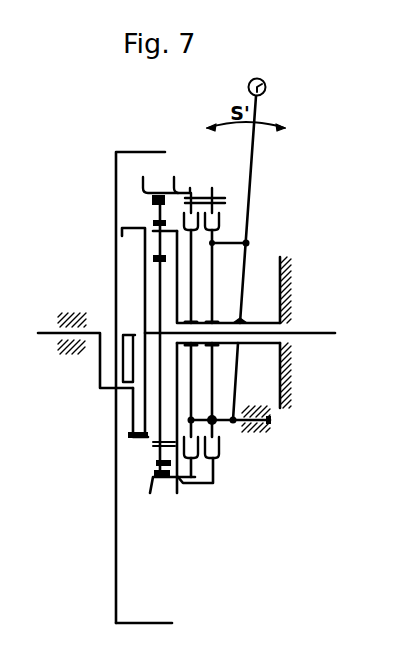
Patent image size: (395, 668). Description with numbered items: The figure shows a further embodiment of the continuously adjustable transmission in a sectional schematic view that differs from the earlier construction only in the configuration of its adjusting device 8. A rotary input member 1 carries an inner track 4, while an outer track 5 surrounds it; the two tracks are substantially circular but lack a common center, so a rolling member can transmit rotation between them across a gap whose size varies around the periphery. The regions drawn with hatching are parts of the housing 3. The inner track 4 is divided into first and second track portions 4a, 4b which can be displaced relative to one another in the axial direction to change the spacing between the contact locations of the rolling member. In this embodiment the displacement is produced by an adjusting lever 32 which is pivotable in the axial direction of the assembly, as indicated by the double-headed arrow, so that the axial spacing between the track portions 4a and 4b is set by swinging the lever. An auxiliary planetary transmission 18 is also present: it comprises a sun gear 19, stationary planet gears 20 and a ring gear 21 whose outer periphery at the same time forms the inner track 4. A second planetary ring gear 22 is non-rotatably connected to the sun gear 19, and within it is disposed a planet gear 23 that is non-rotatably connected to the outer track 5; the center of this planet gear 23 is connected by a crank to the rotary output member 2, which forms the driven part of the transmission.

The rotary input member 1 is at (197, 188).
The rotary output member 2 is at (42, 337).
The housing 3 is at (284, 267).
The inner track 4 is at (163, 492).
The first track portion 4a is at (150, 493).
The second track portion 4b is at (179, 494).
The outer track 5 is at (162, 620).
The adjusting device 8 is at (252, 202).
The planetary transmission 18 is at (150, 222).
The sun gear 19 is at (160, 327).
The stationary planet gears 20 is at (157, 452).
The ring gear 21 is at (148, 193).
The second planetary ring gear 22 is at (124, 233).
The planet gear 23 is at (133, 418).
The adjusting lever 32 is at (255, 153).